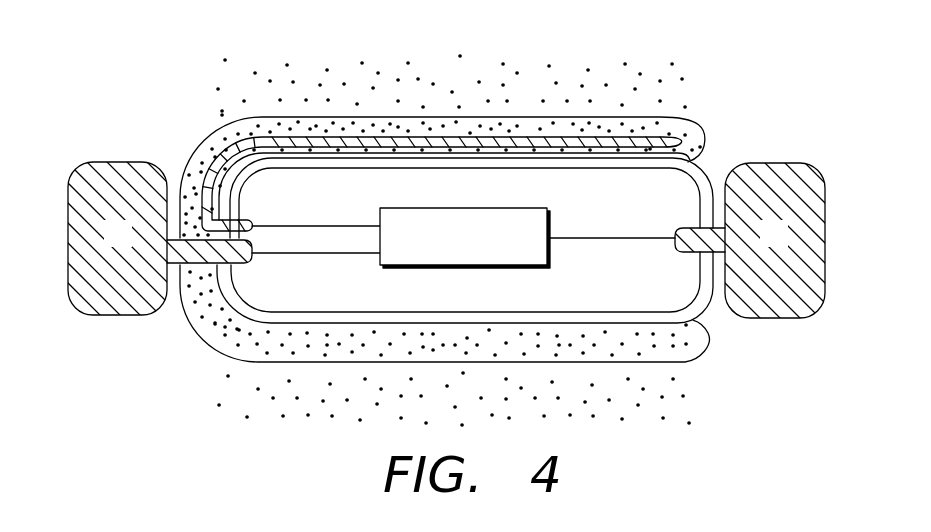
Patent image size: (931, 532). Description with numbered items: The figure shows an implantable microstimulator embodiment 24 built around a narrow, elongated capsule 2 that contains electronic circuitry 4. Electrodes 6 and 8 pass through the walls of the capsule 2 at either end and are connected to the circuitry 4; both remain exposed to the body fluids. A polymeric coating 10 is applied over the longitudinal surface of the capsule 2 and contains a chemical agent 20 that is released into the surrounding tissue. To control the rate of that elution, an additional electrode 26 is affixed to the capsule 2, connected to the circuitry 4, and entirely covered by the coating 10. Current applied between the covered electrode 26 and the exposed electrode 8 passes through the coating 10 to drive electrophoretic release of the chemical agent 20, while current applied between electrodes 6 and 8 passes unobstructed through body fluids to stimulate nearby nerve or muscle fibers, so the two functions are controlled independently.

The electronic device assembly 24 is at (144, 119).
The chemical agent 20 is at (443, 126).
The additional electrode 26 is at (528, 136).
The coating 10 is at (703, 155).
The electronic circuitry 4 is at (512, 208).
The electrode 6 is at (128, 244).
The electrode 8 is at (784, 244).
The capsule 2 is at (705, 303).